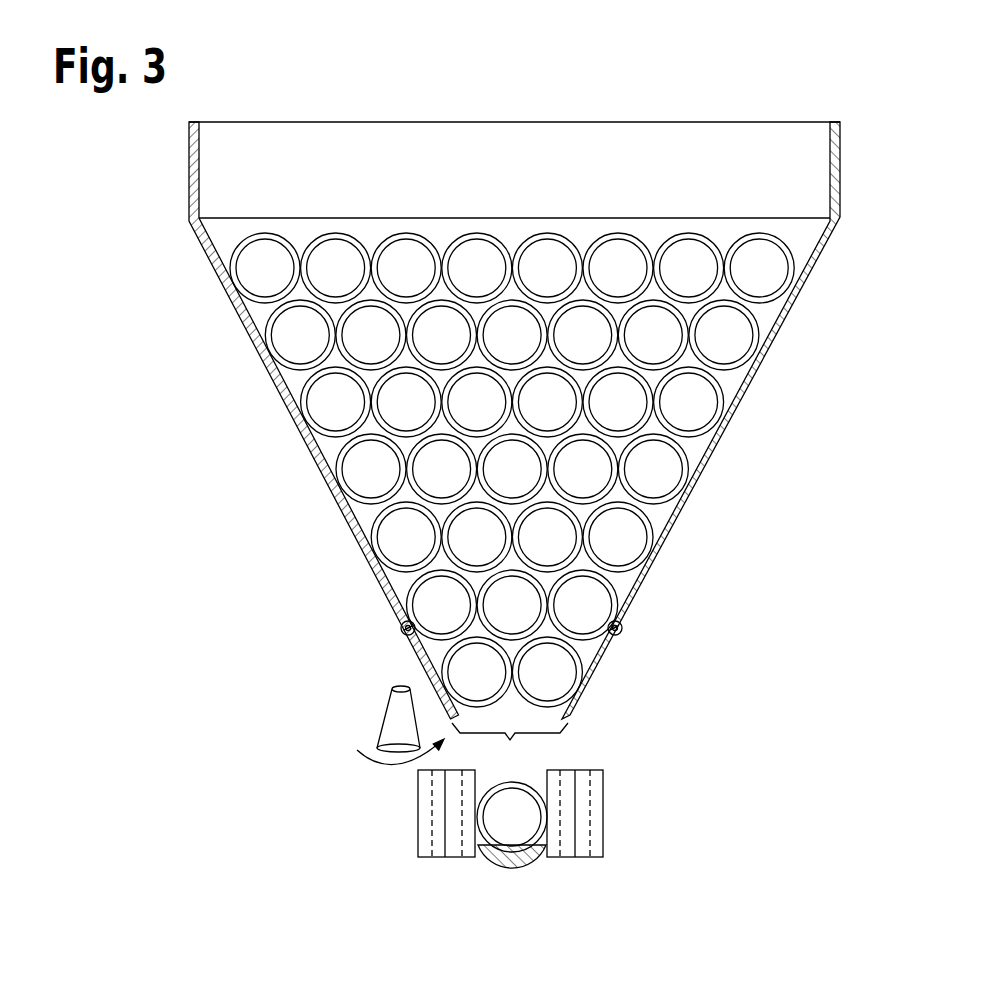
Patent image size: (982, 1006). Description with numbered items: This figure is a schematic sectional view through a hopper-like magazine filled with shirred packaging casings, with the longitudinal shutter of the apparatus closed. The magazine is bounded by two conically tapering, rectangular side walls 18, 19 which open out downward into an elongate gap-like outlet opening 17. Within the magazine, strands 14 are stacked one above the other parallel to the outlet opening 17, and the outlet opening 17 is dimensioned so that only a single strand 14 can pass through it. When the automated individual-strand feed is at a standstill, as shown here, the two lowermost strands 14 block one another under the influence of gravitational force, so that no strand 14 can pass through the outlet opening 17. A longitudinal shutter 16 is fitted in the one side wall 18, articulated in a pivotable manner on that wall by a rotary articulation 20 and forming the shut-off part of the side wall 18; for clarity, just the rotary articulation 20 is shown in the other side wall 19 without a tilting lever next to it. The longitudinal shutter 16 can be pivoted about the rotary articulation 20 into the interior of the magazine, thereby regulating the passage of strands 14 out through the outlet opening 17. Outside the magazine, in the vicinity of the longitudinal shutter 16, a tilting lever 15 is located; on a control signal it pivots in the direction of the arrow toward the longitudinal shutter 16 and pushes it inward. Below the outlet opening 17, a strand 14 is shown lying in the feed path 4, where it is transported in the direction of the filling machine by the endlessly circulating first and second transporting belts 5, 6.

The feed path 4 is at (488, 860).
The first transporting belt 5 is at (418, 807).
The second transporting belt 6 is at (604, 807).
The strand 14 is at (517, 832).
The tilting lever 15 is at (393, 722).
The longitudinal shutter 16 is at (427, 668).
The outlet opening 17 is at (510, 750).
The side wall 18 is at (291, 406).
The side wall 19 is at (738, 402).
The rotary articulation 20 is at (402, 627).